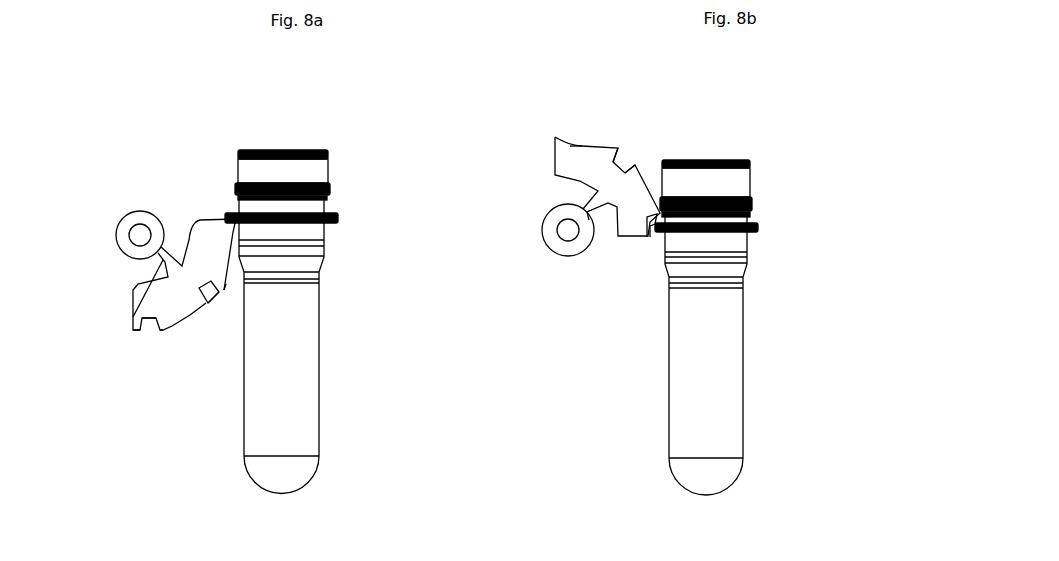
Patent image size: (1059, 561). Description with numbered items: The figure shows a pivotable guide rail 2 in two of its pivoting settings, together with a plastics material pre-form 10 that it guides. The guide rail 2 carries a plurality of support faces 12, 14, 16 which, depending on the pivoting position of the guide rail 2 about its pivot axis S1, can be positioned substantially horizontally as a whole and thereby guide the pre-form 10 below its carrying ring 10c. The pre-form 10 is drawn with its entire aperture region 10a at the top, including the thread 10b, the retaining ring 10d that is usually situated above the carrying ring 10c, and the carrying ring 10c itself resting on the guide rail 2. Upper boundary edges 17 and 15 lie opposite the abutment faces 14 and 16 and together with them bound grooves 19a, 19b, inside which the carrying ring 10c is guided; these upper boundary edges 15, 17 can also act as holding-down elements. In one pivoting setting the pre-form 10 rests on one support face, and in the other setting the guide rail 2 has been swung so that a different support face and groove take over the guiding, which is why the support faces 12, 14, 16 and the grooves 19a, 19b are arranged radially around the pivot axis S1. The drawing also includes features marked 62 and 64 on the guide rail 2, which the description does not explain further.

In FIG. 8a, the guide rail 2 is at (208, 318).
In FIG. 8b, the guide rail 2 is at (587, 226).
In FIG. 8a, the plastics material pre-form 10 is at (282, 290).
In FIG. 8b, the plastics material pre-form 10 is at (755, 294).
In FIG. 8a, the aperture region 10a is at (285, 140).
In FIG. 8b, the aperture region 10a is at (780, 178).
In FIG. 8a, the thread 10b is at (245, 168).
In FIG. 8a, the carrying ring 10c is at (340, 217).
In FIG. 8b, the carrying ring 10c is at (760, 226).
In FIG. 8a, the retaining ring 10d is at (240, 205).
In FIG. 8a, the support face 12 is at (215, 220).
In FIG. 8b, the support face 12 is at (556, 165).
In FIG. 8a, the support face 14 is at (222, 312).
In FIG. 8b, the support face 14 is at (634, 166).
In FIG. 8a, the upper boundary edge 15 is at (212, 292).
In FIG. 8b, the upper boundary edge 15 is at (620, 158).
In FIG. 8a, the support face 16 is at (150, 335).
In FIG. 8b, the support face 16 is at (662, 233).
In FIG. 8a, the upper boundary edge 17 is at (150, 335).
In FIG. 8b, the upper boundary edge 17 is at (655, 223).
In FIG. 8a, the groove 19a is at (148, 337).
In FIG. 8a, the groove 19b is at (212, 292).
In FIG. 8a, the spring arm 62 is at (133, 317).
In FIG. 8b, the stop surface 64 is at (582, 145).
In FIG. 8a, the pivot axis S1 is at (137, 237).
In FIG. 8b, the pivot axis S1 is at (569, 231).